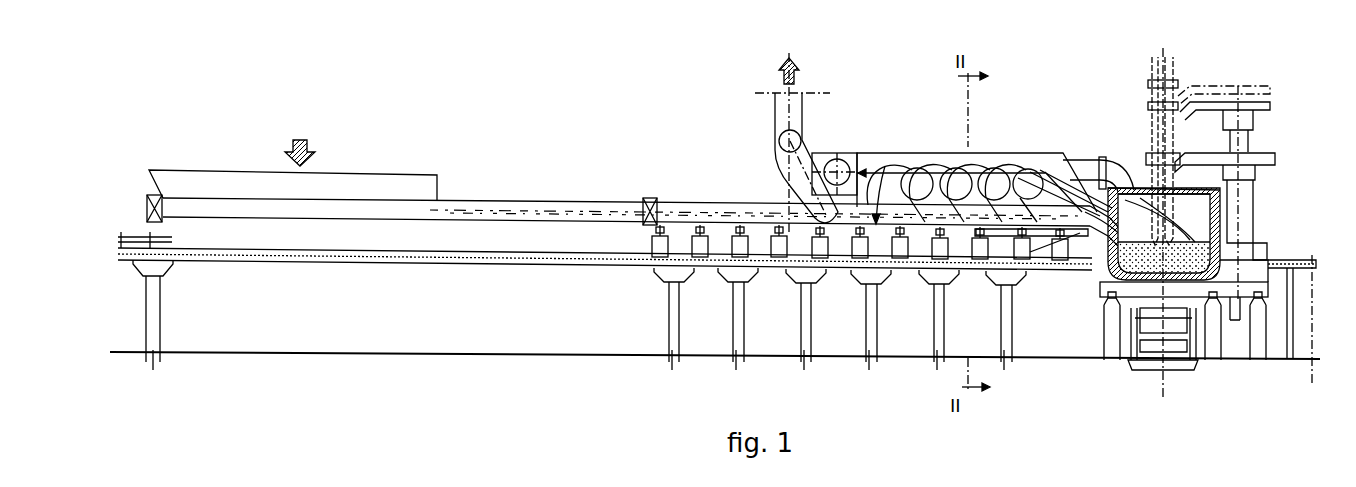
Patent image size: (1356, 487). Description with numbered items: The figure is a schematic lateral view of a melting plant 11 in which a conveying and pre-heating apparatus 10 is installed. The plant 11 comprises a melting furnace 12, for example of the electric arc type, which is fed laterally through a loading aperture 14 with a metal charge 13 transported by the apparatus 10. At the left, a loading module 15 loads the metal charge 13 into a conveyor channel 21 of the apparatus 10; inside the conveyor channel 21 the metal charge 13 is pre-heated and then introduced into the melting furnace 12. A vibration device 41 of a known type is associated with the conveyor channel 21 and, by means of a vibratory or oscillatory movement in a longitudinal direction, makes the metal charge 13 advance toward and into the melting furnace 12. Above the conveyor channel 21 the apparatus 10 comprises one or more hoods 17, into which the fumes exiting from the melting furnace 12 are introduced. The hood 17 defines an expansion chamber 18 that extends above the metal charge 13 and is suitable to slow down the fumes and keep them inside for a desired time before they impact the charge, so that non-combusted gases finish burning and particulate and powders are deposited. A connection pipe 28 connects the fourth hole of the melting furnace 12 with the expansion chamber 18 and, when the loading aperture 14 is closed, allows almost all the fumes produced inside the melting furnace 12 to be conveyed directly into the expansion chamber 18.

The conveying and pre-heating apparatus 10 is at (1057, 129).
The melting plant 11 is at (672, 112).
The melting furnace 12 is at (1222, 220).
The metal charge 13 is at (496, 215).
The loading aperture 14 is at (1112, 240).
The loading module 15 is at (393, 185).
The hood 17 is at (791, 194).
The expansion chamber 18 is at (924, 158).
The conveyor channel 21 is at (805, 228).
The connection pipe 28 is at (1122, 165).
The vibration device 41 is at (1045, 232).